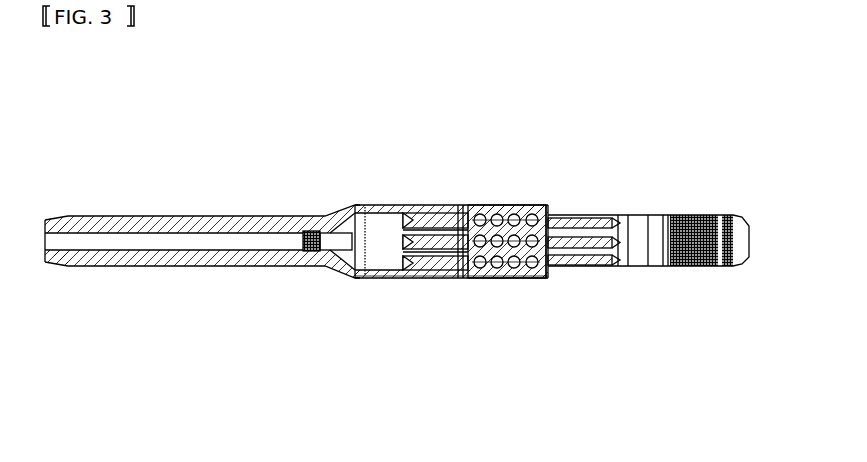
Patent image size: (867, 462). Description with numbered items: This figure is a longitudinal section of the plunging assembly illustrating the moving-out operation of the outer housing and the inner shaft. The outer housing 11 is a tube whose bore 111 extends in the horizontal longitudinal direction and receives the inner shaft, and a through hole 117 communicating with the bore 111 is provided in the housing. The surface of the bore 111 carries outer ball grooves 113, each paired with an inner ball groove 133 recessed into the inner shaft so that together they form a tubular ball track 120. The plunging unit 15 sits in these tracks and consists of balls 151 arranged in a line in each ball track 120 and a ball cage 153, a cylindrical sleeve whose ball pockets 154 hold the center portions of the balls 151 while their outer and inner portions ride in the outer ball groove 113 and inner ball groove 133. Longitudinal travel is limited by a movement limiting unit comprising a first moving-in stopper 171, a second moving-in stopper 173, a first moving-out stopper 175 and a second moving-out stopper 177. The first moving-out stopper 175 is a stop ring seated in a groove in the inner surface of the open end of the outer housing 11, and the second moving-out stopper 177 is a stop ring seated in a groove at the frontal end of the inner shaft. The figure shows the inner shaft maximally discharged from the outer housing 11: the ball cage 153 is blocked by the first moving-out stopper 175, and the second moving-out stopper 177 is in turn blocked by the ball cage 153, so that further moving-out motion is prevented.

The through hole 117 is at (272, 240).
The second moving-in stopper 173 is at (312, 238).
The outer housing 11 is at (383, 207).
The bore 111 is at (380, 247).
The first moving-in stopper 171 is at (424, 215).
The second moving-out stopper 177 is at (455, 213).
The ball pocket 154 is at (472, 212).
The ball cage 153 is at (498, 210).
The ball 151 is at (518, 210).
The first moving-out stopper 175 is at (536, 208).
The plunging unit 15 is at (568, 178).
The outer ball groove 113 is at (432, 280).
The inner ball groove 133 is at (590, 262).
The ball track 120 is at (553, 398).